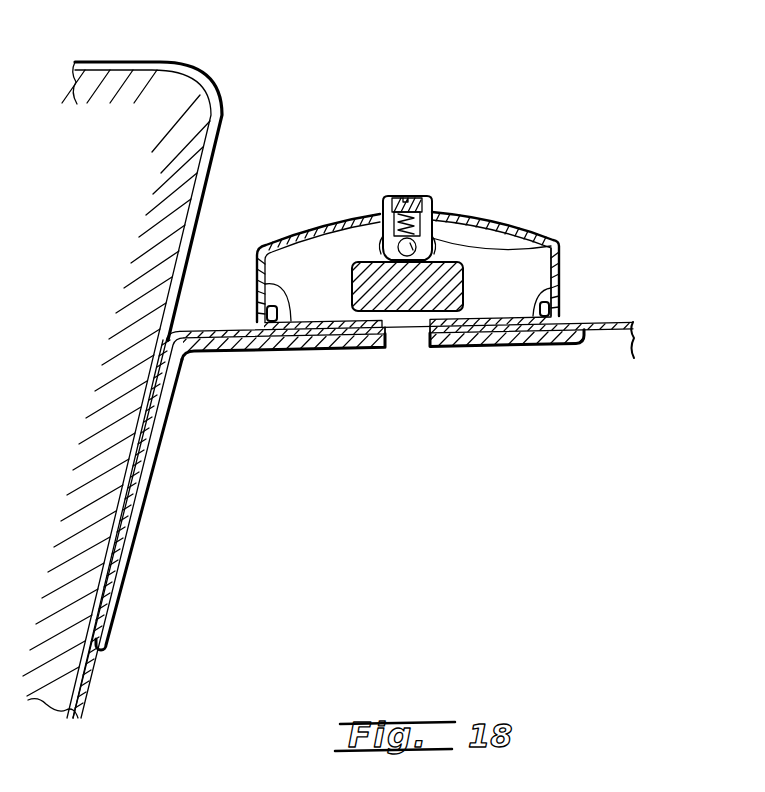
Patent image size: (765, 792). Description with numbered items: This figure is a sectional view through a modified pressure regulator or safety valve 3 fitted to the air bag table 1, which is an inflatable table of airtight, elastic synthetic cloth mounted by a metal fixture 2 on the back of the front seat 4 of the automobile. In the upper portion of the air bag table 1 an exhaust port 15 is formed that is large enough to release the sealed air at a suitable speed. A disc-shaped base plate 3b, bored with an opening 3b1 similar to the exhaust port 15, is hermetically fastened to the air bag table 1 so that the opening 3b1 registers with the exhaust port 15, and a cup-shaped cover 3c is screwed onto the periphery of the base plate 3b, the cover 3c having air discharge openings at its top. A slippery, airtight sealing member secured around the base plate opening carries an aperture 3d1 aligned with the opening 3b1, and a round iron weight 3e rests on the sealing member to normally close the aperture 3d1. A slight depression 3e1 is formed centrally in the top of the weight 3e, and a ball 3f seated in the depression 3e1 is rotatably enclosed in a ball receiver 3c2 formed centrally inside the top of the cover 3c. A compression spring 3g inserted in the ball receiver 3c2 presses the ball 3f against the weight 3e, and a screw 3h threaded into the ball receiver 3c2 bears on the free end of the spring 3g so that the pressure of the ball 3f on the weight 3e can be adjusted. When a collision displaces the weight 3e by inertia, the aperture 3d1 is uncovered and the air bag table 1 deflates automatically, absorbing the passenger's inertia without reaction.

The air bag table 1 is at (607, 324).
The fixture 2 is at (224, 104).
The pressure regulator 3 is at (360, 381).
The base plate 3b is at (265, 294).
The opening 3b1 is at (386, 332).
The cover 3c is at (279, 238).
The ball receiver 3c2 is at (553, 242).
The aperture 3d1 is at (428, 330).
The weight 3e is at (349, 270).
The depression 3e1 is at (382, 228).
The ball 3f is at (446, 214).
The compression spring 3g is at (437, 216).
The screw 3h is at (419, 195).
The front seat 4 is at (178, 86).
The exhaust port 15 is at (392, 336).